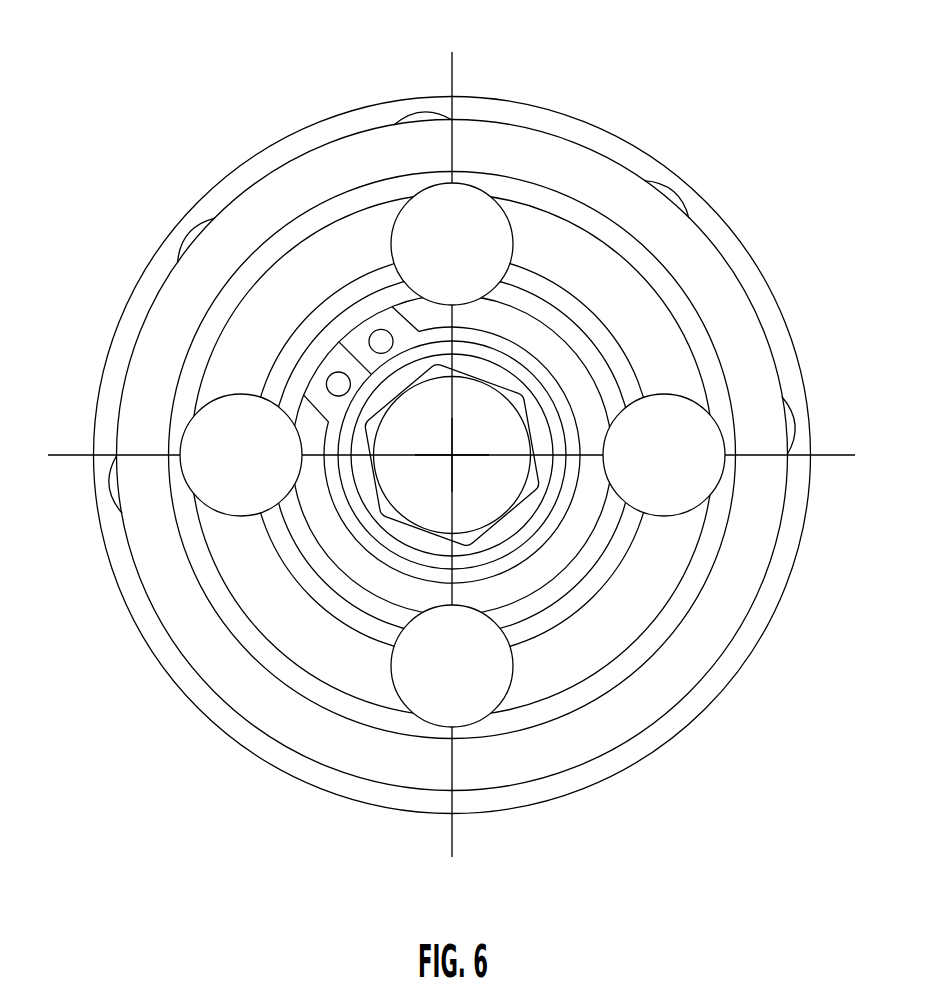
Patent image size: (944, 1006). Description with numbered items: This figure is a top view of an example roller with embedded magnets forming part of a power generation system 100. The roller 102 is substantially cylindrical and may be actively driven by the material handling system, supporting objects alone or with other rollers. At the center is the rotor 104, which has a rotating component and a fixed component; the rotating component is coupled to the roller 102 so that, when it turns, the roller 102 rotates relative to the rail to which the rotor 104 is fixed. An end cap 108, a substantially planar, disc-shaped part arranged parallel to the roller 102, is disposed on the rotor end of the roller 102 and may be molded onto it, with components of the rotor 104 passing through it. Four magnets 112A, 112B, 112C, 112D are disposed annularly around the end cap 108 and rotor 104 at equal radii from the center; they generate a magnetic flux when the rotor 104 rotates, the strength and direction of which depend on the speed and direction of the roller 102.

The power generation system 100 is at (692, 61).
The roller 102 is at (753, 257).
The rotor 104 is at (502, 492).
The end cap 108 is at (781, 378).
The magnet 112A is at (422, 235).
The magnet 112B is at (212, 437).
The magnet 112C is at (423, 692).
The magnet 112D is at (683, 482).